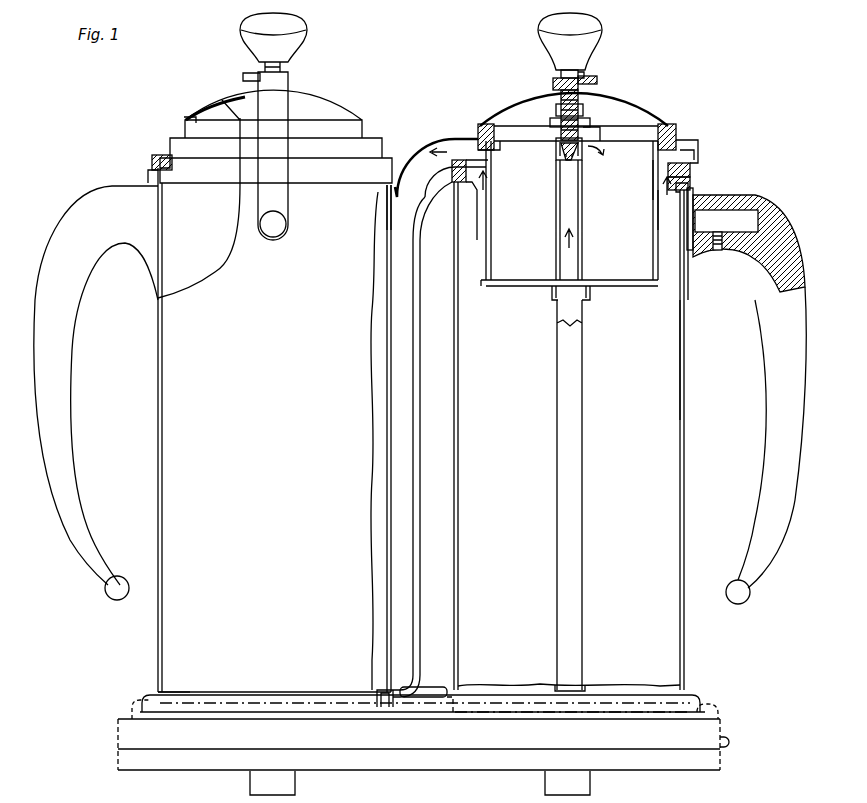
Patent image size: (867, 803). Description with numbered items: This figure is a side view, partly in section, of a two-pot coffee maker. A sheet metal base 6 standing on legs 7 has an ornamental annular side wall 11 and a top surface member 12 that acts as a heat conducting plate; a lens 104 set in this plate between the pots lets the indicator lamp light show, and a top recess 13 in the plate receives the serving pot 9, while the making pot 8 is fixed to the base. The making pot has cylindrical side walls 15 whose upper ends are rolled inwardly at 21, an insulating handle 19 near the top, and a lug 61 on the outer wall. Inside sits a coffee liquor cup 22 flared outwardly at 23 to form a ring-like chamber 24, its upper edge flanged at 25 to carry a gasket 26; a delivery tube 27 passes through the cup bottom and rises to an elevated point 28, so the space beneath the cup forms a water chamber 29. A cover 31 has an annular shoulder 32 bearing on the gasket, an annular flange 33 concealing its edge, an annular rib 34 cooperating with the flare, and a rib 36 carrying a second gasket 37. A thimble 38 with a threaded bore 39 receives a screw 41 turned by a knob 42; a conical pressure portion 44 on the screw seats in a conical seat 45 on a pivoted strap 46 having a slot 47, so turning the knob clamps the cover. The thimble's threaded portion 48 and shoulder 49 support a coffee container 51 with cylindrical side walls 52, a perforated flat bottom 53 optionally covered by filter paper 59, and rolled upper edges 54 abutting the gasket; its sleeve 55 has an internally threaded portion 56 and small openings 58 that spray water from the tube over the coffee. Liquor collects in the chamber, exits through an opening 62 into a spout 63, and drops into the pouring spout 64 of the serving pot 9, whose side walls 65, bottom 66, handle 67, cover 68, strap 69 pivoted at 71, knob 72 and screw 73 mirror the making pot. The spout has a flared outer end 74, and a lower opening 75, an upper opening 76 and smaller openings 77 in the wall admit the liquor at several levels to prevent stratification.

The base 6 is at (419, 744).
The legs 7 is at (545, 784).
The making pot 8 is at (698, 442).
The serving pot 9 is at (144, 412).
The annular side wall 11 is at (720, 722).
The top surface member 12 is at (688, 699).
The top recess 13 is at (128, 712).
The cylindrical side walls 15 is at (685, 362).
The handle 19 is at (766, 445).
The rolled upper ends 21 is at (676, 198).
The coffee liquor cup 22 is at (610, 288).
The outward flare 23 is at (655, 190).
The ring-like chamber 24 is at (652, 175).
The flange 25 is at (690, 166).
The gasket 26 is at (692, 180).
The delivery tube 27 is at (556, 375).
The elevated point of delivery tube 28 is at (583, 165).
The water chamber 29 is at (569, 585).
The cover 31 is at (640, 120).
The annular shoulder 32 is at (457, 152).
The annular flange 33 is at (423, 168).
The annular rib 34 is at (678, 135).
The rib 36 is at (484, 124).
The gasket 37 is at (492, 125).
The thimble 38 is at (583, 108).
The threaded bore 39 is at (548, 120).
The screw 41 is at (558, 97).
The knob 42 is at (586, 27).
The conical pressure portion 44 is at (569, 70).
The conical seat 45 is at (586, 72).
The strap 46 is at (598, 77).
The slot 47 is at (560, 87).
The threaded portion 48 is at (590, 122).
The shoulder 49 is at (542, 129).
The coffee container 51 is at (653, 165).
The cylindrical side walls 52 is at (488, 190).
The perforated flat bottom 53 is at (614, 270).
The rolled upper edges 54 is at (677, 131).
The sleeve 55 is at (554, 249).
The internally threaded portion 56 is at (598, 129).
The small openings 58 is at (556, 153).
The filter paper 59 is at (590, 268).
The lug 61 is at (695, 196).
The opening 62 is at (462, 160).
The spout 63 is at (428, 137).
The pouring spout 64 is at (416, 355).
The cylindrical side walls 65 is at (158, 208).
The bottom 66 is at (184, 696).
The handle 67 is at (96, 393).
The cover 68 is at (208, 108).
The strap 69 is at (267, 90).
The pivot 71 is at (280, 232).
The knob 72 is at (285, 43).
The screw 73 is at (282, 69).
The flared outer end 74 is at (443, 198).
The opening 75 is at (382, 670).
The opening 76 is at (378, 213).
The smaller openings 77 is at (387, 332).
The lens 104 is at (424, 686).